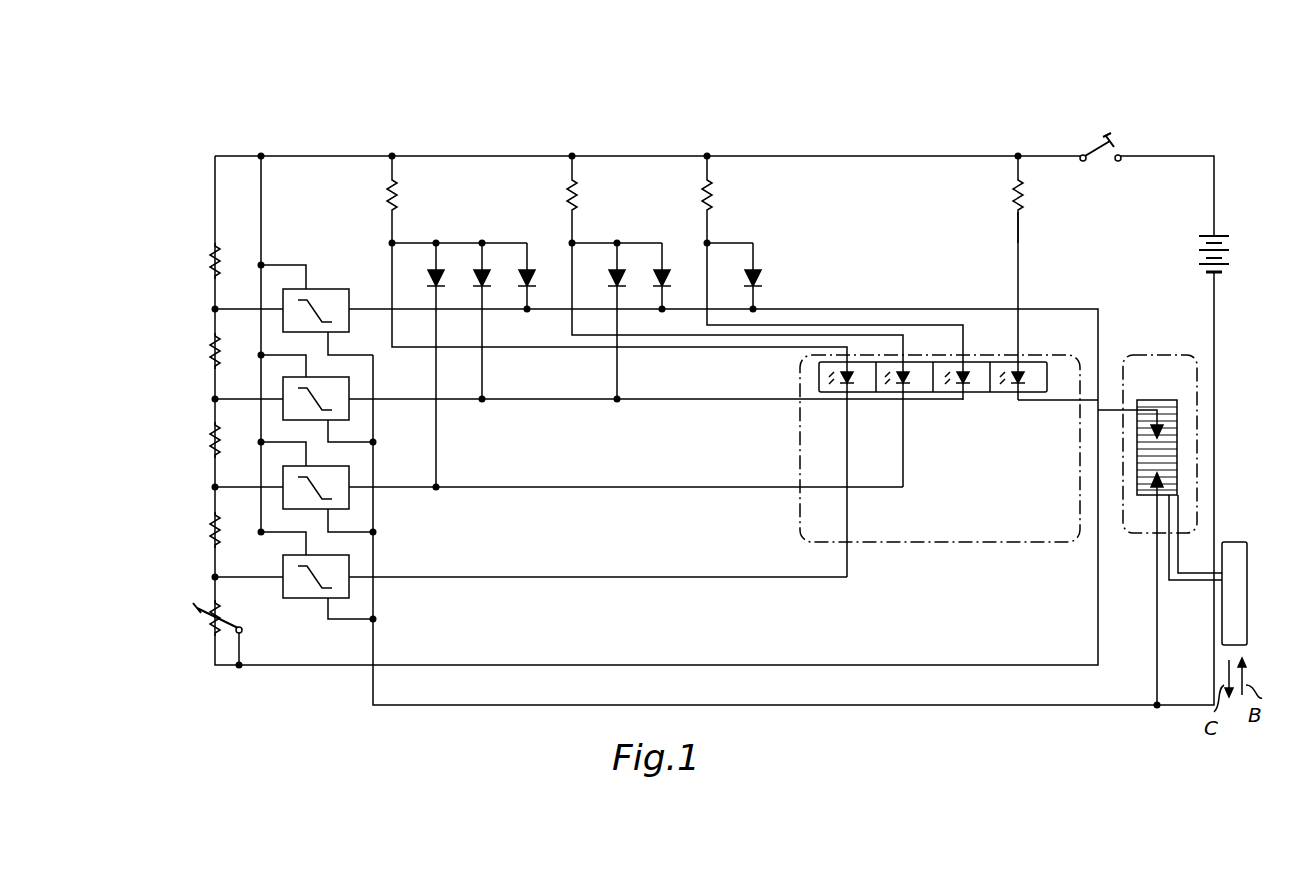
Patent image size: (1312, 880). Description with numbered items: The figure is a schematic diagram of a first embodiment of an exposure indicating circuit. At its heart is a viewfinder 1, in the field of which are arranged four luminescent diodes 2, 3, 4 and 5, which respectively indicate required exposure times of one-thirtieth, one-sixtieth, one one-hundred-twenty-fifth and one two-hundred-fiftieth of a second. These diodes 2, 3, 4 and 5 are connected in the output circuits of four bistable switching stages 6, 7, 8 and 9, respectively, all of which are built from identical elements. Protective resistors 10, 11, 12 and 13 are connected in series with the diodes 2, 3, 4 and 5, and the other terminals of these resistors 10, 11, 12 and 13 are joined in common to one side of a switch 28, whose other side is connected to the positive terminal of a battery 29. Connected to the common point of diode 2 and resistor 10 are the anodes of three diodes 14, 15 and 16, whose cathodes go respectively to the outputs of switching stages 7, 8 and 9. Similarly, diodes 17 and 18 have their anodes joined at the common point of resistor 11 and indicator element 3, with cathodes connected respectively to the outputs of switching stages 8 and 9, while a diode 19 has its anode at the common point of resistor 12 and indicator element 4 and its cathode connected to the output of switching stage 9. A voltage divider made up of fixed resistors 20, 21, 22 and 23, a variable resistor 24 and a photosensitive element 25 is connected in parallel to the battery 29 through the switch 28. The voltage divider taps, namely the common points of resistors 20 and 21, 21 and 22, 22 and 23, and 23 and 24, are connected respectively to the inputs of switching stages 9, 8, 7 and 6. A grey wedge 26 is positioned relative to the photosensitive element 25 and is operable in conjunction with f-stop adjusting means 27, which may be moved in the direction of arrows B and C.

The viewfinder 1 is at (955, 538).
The luminescent diode 2 is at (852, 385).
The luminescent diode 3 is at (908, 383).
The luminescent diode 4 is at (968, 383).
The luminescent diode 5 is at (1023, 383).
The switching stage 6 is at (300, 591).
The switching stage 7 is at (343, 502).
The switching stage 8 is at (343, 412).
The switching stage 9 is at (343, 289).
The protective resistor 10 is at (396, 200).
The protective resistor 11 is at (568, 200).
The protective resistor 12 is at (703, 200).
The protective resistor 13 is at (1012, 200).
The diode 14 is at (441, 285).
The diode 15 is at (477, 266).
The diode 16 is at (533, 285).
The diode 17 is at (611, 275).
The diode 18 is at (655, 275).
The diode 19 is at (760, 283).
The fixed resistor 20 is at (212, 252).
The fixed resistor 21 is at (212, 345).
The fixed resistor 22 is at (212, 436).
The fixed resistor 23 is at (212, 528).
The variable resistor 24 is at (208, 630).
The photosensitive element 25 is at (1175, 463).
The grey wedge 26 is at (1170, 437).
The f-stop adjusting means 27 is at (1215, 570).
The switch 28 is at (1122, 152).
The battery 29 is at (1197, 258).